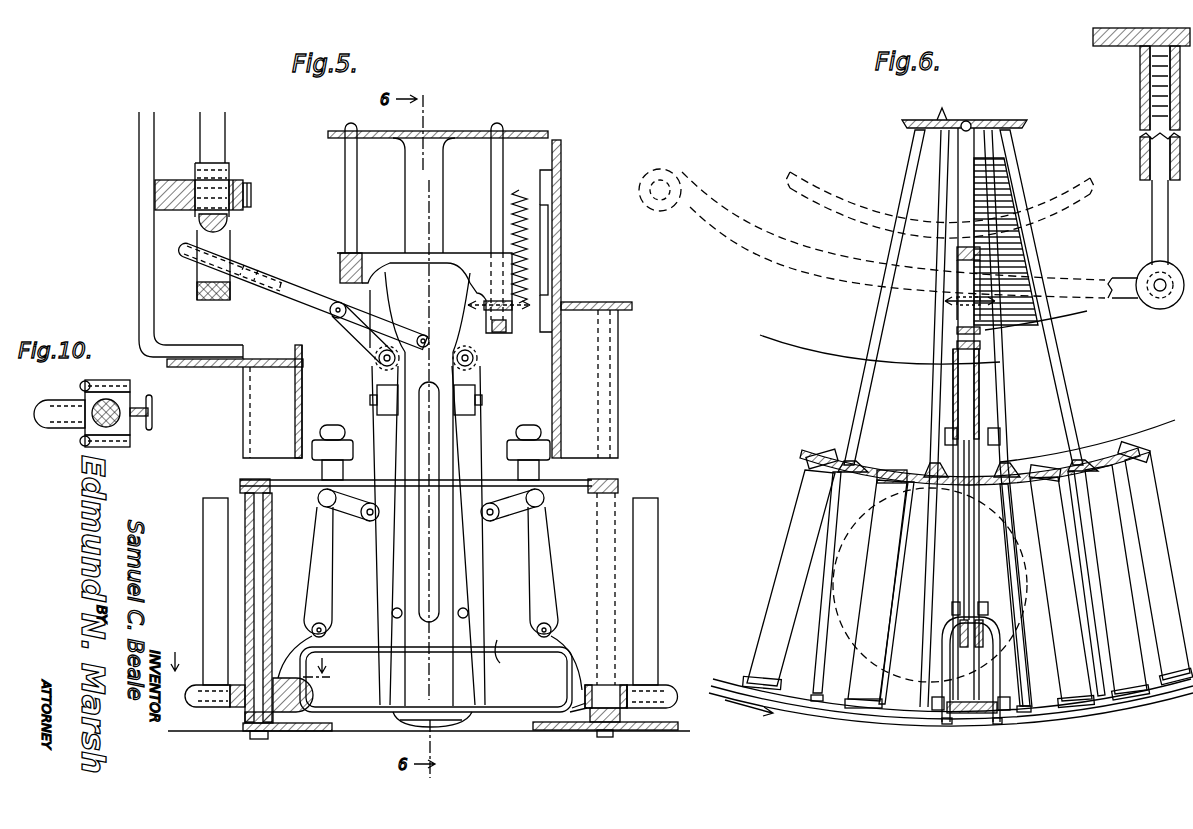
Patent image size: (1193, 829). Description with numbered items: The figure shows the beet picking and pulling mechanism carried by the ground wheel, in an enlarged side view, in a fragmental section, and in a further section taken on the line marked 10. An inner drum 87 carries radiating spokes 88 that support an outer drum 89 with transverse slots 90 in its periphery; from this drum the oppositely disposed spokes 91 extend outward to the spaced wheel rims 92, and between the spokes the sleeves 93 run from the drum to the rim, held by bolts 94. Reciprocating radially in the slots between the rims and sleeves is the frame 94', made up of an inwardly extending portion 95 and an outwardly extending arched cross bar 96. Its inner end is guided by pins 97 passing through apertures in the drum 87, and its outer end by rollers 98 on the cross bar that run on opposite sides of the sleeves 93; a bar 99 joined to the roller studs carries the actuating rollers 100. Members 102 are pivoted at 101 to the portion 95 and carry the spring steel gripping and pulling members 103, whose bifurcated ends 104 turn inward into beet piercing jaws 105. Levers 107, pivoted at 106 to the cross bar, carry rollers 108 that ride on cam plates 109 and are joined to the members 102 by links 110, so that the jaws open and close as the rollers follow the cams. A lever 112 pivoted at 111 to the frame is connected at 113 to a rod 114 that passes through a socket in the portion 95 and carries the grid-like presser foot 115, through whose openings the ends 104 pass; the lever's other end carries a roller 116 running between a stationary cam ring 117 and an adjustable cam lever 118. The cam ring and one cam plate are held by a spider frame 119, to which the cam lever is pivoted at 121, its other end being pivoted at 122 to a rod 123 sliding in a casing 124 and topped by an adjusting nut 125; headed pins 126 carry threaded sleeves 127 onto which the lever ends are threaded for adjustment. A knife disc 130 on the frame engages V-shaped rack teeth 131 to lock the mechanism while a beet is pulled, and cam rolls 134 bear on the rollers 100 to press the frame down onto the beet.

In FIG. 5, the drum 87 is at (458, 130).
In FIG. 6, the drum 87 is at (940, 120).
In FIG. 6, the spokes 88 is at (870, 378).
In FIG. 5, the drum 89 is at (618, 484).
In FIG. 6, the drum 89 is at (880, 470).
In FIG. 5, the transverse slots 90 is at (290, 482).
In FIG. 6, the transverse slots 90 is at (822, 456).
In FIG. 6, the spokes 91 is at (824, 640).
In FIG. 5, the wheel rims 92 is at (296, 731).
In FIG. 6, the wheel rims 92 is at (836, 716).
In FIG. 5, the sleeves 93 is at (272, 558).
In FIG. 6, the sleeves 93 is at (770, 618).
In FIG. 10, the sleeves 93 is at (106, 430).
In FIG. 5, the bolts 94 is at (288, 642).
In FIG. 10, the bolts 94 is at (145, 392).
In FIG. 5, the frame 94' is at (514, 598).
In FIG. 6, the frame 94' is at (930, 585).
In FIG. 5, the inwardly extending portion 95 is at (455, 258).
In FIG. 6, the inwardly extending portion 95 is at (955, 257).
In FIG. 5, the arched cross bar 96 is at (503, 645).
In FIG. 6, the arched cross bar 96 is at (944, 645).
In FIG. 10, the arched cross bar 96 is at (155, 412).
In FIG. 5, the pins 97 is at (358, 180).
In FIG. 6, the pins 97 is at (958, 180).
In FIG. 5, the rollers 98 is at (592, 720).
In FIG. 6, the rollers 98 is at (932, 698).
In FIG. 10, the rollers 98 is at (118, 378).
In FIG. 5, the bar 99 is at (238, 714).
In FIG. 10, the bar 99 is at (88, 424).
In FIG. 5, the actuating rollers 100 is at (210, 712).
In FIG. 10, the actuating rollers 100 is at (58, 402).
In FIG. 5, the pivot 101 is at (378, 359).
In FIG. 5, the members 102 is at (378, 400).
In FIG. 5, the gripping and pulling members 103 is at (380, 590).
In FIG. 5, the bifurcated ends 104 is at (385, 662).
In FIG. 6, the bifurcated ends 104 is at (944, 665).
In FIG. 5, the beet piercing jaws 105 is at (398, 727).
In FIG. 6, the beet piercing jaws 105 is at (945, 724).
In FIG. 5, the pivot 106 is at (314, 627).
In FIG. 5, the levers 107 is at (318, 560).
In FIG. 5, the rollers 108 is at (312, 438).
In FIG. 6, the rollers 108 is at (1001, 436).
In FIG. 5, the cam plates 109 is at (300, 380).
In FIG. 6, the cam plates 109 is at (850, 345).
In FIG. 5, the links 110 is at (352, 516).
In FIG. 5, the pivot 111 is at (334, 318).
In FIG. 5, the lever 112 is at (290, 303).
In FIG. 5, the pivot 113 is at (416, 339).
In FIG. 6, the pivot 113 is at (955, 340).
In FIG. 5, the rod 114 is at (445, 548).
In FIG. 6, the rod 114 is at (976, 535).
In FIG. 5, the presser foot 115 is at (392, 731).
In FIG. 6, the presser foot 115 is at (970, 714).
In FIG. 5, the roller 116 is at (243, 268).
In FIG. 5, the cam ring 117 is at (228, 219).
In FIG. 6, the cam ring 117 is at (842, 200).
In FIG. 5, the cam lever 118 is at (210, 301).
In FIG. 6, the cam lever 118 is at (828, 272).
In FIG. 5, the spider frame 119 is at (139, 262).
In FIG. 5, the pivot 121 is at (182, 175).
In FIG. 6, the pivot 121 is at (656, 212).
In FIG. 6, the pivot 122 is at (1159, 304).
In FIG. 6, the rod 123 is at (1152, 228).
In FIG. 6, the casing 124 is at (1140, 152).
In FIG. 6, the adjusting nut 125 is at (1140, 72).
In FIG. 5, the headed pins 126 is at (252, 192).
In FIG. 6, the headed pins 126 is at (1157, 311).
In FIG. 5, the threaded sleeves 127 is at (236, 182).
In FIG. 5, the knife disc 130 is at (515, 316).
In FIG. 6, the knife disc 130 is at (955, 305).
In FIG. 5, the rack teeth 131 is at (529, 236).
In FIG. 6, the rack teeth 131 is at (1040, 250).
In FIG. 5, the cam rolls 134 is at (206, 583).
In FIG. 6, the cam rolls 134 is at (852, 660).
In FIG. 5, the section line 10 is at (256, 655).